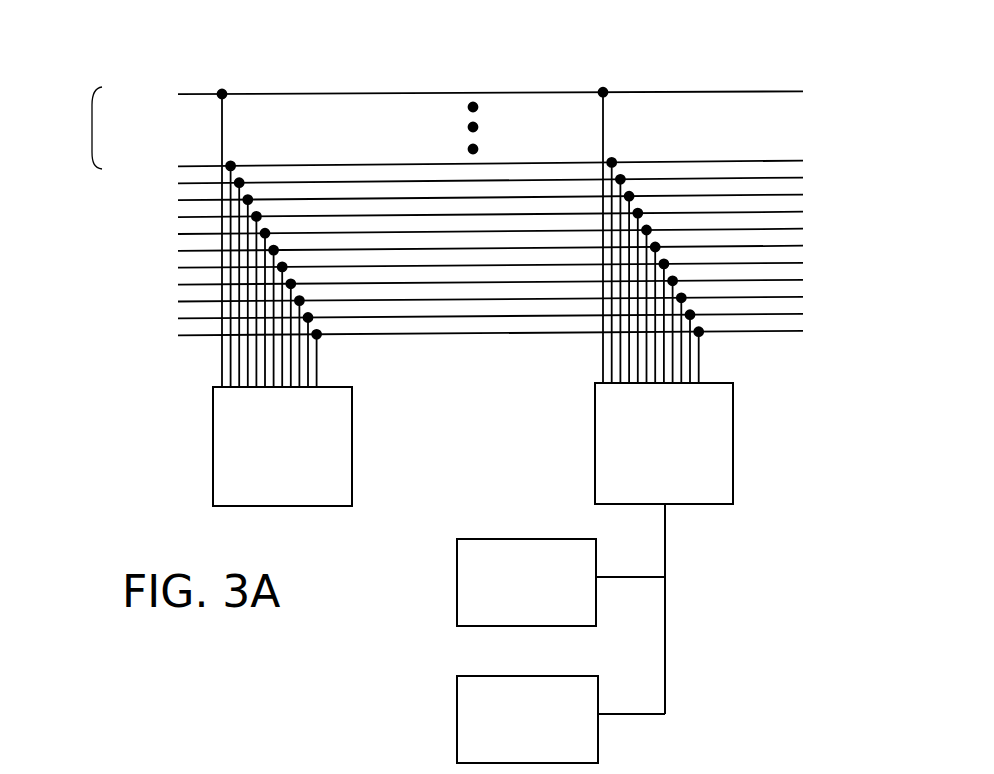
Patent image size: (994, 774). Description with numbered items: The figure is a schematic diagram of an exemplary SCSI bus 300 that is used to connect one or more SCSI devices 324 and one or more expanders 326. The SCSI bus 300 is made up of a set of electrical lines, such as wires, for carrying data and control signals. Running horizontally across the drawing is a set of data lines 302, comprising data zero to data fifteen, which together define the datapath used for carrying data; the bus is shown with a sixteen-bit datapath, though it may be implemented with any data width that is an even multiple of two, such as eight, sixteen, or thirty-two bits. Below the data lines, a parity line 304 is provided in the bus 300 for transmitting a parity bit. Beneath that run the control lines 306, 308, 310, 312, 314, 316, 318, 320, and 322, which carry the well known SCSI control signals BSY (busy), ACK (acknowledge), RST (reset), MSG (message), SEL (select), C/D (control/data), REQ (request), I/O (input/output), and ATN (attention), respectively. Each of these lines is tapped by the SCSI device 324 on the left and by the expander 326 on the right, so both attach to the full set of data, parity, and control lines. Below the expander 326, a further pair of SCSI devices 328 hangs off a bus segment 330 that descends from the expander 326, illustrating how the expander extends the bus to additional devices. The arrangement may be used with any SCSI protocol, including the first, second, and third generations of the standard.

The SCSI bus 300 is at (722, 46).
The set of data lines 302 is at (423, 237).
The parity line 304 is at (263, 177).
The control line 306 is at (753, 193).
The control line 308 is at (299, 215).
The control line 310 is at (480, 232).
The control line 312 is at (672, 243).
The control line 314 is at (325, 267).
The control line 316 is at (397, 283).
The control line 318 is at (457, 301).
The control line 320 is at (518, 317).
The control line 322 is at (743, 333).
The SCSI device 324 is at (352, 443).
The expander 326 is at (733, 440).
The SCSI devices 328 is at (527, 539).
The expander bus segment 330 is at (665, 630).